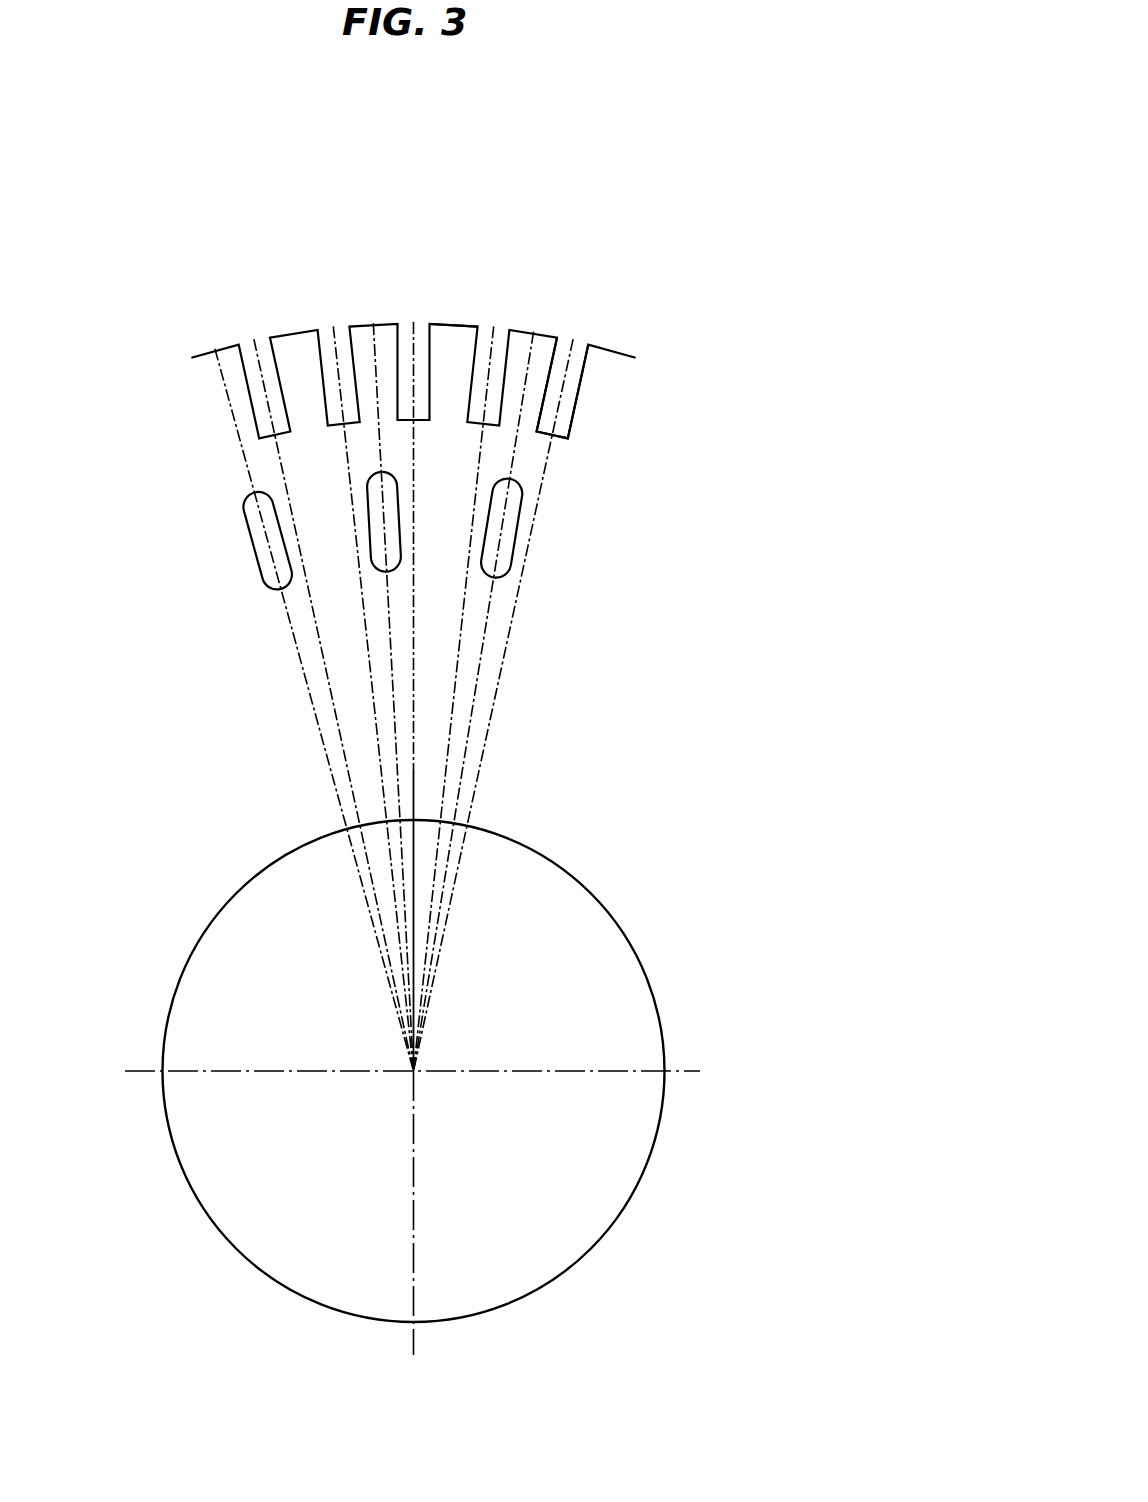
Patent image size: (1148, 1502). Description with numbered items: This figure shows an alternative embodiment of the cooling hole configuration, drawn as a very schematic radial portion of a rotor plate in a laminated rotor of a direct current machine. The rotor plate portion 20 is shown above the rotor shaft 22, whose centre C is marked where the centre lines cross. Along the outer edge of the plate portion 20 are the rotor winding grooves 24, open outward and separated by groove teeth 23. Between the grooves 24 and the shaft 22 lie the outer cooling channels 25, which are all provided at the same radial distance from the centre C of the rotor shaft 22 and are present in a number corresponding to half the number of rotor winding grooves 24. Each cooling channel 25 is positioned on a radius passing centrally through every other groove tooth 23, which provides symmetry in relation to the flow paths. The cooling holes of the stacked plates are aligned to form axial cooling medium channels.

The stator 20 is at (642, 399).
The rotor shaft 22 is at (540, 968).
The groove tooth 23 is at (447, 333).
The rotor winding groove 24 is at (573, 343).
The outer cooling channel 25 is at (515, 538).
The centre C is at (416, 1072).